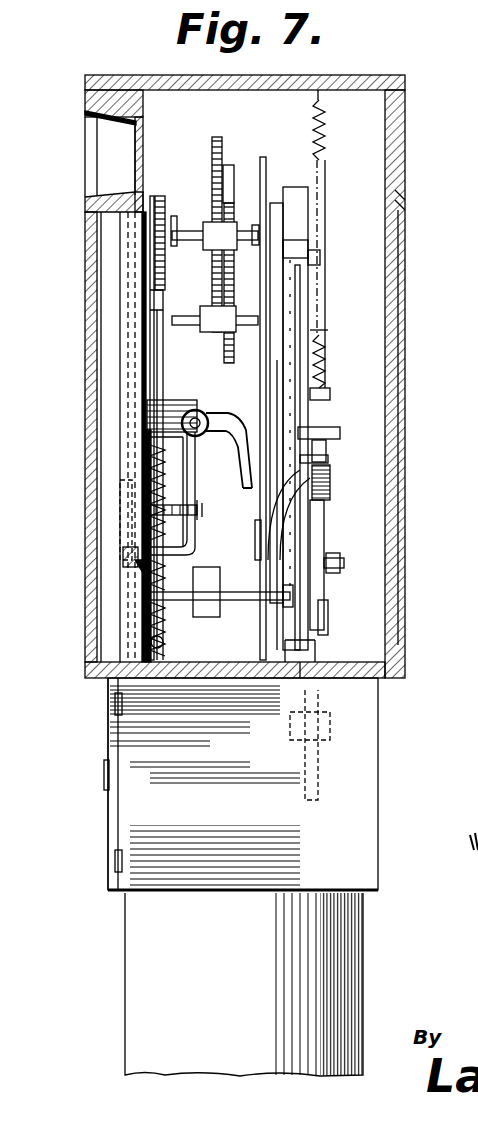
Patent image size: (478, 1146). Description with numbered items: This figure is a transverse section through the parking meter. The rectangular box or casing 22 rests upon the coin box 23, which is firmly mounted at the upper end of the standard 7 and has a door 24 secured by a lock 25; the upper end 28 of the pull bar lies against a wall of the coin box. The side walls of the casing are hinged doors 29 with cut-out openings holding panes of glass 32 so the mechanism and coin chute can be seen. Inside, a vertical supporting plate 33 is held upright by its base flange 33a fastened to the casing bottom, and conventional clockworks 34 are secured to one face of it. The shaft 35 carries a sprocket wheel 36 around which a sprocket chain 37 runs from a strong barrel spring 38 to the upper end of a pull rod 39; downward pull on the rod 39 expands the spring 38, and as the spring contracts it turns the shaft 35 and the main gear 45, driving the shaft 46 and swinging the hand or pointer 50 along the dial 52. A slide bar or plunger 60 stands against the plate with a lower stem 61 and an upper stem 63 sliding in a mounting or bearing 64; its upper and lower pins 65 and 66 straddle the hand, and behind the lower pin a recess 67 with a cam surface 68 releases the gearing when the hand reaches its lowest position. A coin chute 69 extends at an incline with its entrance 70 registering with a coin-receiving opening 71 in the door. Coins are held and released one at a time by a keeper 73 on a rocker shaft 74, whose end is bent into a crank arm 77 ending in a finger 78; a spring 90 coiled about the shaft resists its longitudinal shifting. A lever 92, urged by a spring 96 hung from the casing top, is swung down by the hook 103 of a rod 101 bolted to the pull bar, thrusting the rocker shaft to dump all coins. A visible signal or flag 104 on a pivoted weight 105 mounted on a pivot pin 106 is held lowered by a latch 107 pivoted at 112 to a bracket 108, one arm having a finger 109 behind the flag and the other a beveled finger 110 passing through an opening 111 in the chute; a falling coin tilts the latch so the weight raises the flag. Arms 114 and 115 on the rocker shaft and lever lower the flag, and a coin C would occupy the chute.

The standard 7 is at (140, 960).
The box or casing 22 is at (356, 76).
The coin box 23 is at (372, 803).
The door 24 is at (110, 843).
The lock 25 is at (112, 788).
The upper end of the bar 28 is at (320, 792).
The doors 29 is at (95, 205).
The panes of glass 32 is at (99, 318).
The supporting plate 33 is at (278, 352).
The base flange 33a is at (312, 652).
The clockworks 34 is at (207, 254).
The shaft 35 is at (192, 240).
The sprocket wheel 36 is at (151, 196).
The sprocket chain 37 is at (195, 240).
The barrel spring 38 is at (143, 460).
The pull rod 39 is at (160, 345).
The main gear 45 is at (222, 140).
The shaft 46 is at (188, 327).
The hand or pointer 50 is at (300, 286).
The dial 52 is at (263, 157).
The slide bar or plunger 60 is at (288, 297).
The stem 61 is at (332, 583).
The stem 63 is at (288, 187).
The mounting or bearing 64 is at (297, 245).
The upper side arm or pin 65 is at (320, 258).
The lower side arm or pin 66 is at (336, 428).
The recess 67 is at (330, 396).
The cam surface 68 is at (312, 362).
The coin chute 69 is at (128, 262).
The entrance 70 is at (118, 105).
The coin-receiving opening 71 is at (92, 143).
The keeper 73 is at (125, 497).
The rocker shaft 74 is at (244, 540).
The crank arm 77 is at (312, 545).
The finger 78 is at (342, 564).
The spring 90 is at (148, 514).
The lever 92 is at (331, 498).
The spring 96 is at (326, 134).
The rod 101 is at (330, 678).
The side arm or hook 103 is at (328, 450).
The visible signal or flag 104 is at (178, 504).
The weight 105 is at (215, 580).
The pivot pin 106 is at (182, 610).
The latch 107 is at (244, 440).
The bracket 108 is at (188, 400).
The finger 109 is at (326, 478).
The finger 110 is at (148, 590).
The opening 111 is at (128, 575).
The pivot 112 is at (207, 413).
The arm 114 is at (252, 601).
The arm 115 is at (256, 582).
The coin C is at (122, 570).